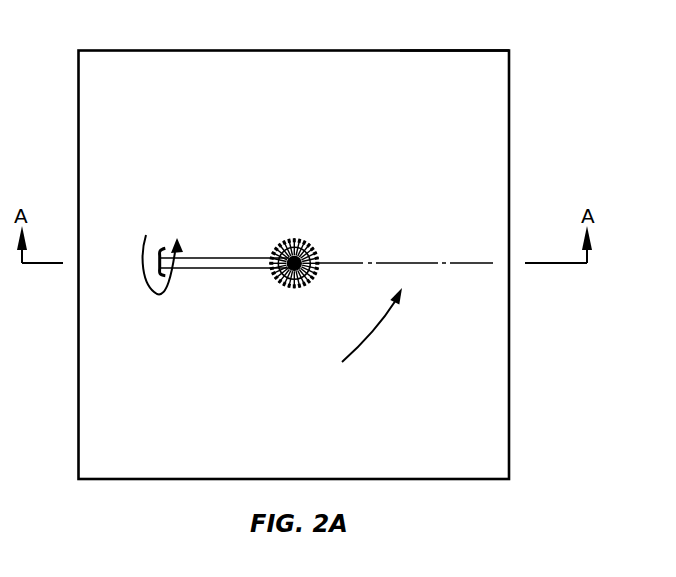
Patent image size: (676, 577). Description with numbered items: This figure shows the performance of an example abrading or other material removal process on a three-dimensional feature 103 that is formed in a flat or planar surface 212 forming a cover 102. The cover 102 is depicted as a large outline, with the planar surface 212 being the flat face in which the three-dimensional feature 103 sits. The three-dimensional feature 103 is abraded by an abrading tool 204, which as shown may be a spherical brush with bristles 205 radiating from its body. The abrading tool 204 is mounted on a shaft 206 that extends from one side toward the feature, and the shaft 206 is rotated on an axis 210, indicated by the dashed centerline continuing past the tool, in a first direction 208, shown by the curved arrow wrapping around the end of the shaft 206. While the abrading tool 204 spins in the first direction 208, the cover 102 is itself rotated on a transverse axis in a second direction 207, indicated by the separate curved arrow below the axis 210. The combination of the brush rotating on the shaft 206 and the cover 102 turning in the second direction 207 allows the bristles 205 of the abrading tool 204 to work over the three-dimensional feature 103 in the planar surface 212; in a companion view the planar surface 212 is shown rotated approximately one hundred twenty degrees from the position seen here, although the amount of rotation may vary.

The cover 102 is at (509, 347).
The three-dimensional feature 103 is at (298, 240).
The abrading tool 204 is at (331, 239).
The bristles 205 is at (319, 258).
The shaft 206 is at (213, 258).
The second direction 207 is at (379, 331).
The first direction 208 is at (160, 296).
The axis 210 is at (435, 262).
The planar surface 212 is at (483, 57).